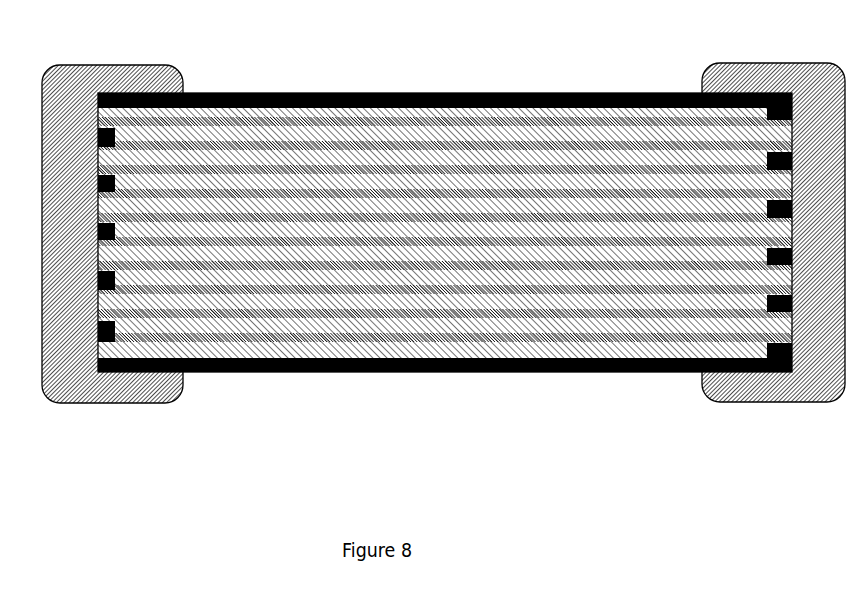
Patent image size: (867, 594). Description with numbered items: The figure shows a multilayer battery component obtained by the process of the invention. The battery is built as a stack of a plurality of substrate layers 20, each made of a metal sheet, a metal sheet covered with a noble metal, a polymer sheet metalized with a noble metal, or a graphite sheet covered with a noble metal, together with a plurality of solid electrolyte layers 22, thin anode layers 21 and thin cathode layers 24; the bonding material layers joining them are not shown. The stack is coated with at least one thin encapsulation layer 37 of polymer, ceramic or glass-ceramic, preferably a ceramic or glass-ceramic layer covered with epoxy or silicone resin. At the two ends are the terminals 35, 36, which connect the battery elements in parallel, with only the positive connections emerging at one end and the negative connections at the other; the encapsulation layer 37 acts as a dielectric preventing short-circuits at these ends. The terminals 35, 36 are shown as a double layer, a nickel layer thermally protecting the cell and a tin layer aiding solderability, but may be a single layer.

The substrate layer 20 is at (179, 241).
The thin anode layer 21 is at (461, 259).
The solid electrolyte layer 22 is at (356, 252).
The thin cathode layer 24 is at (263, 252).
The terminal 35 is at (84, 402).
The terminal 36 is at (764, 402).
The thin encapsulation layer 37 is at (759, 192).